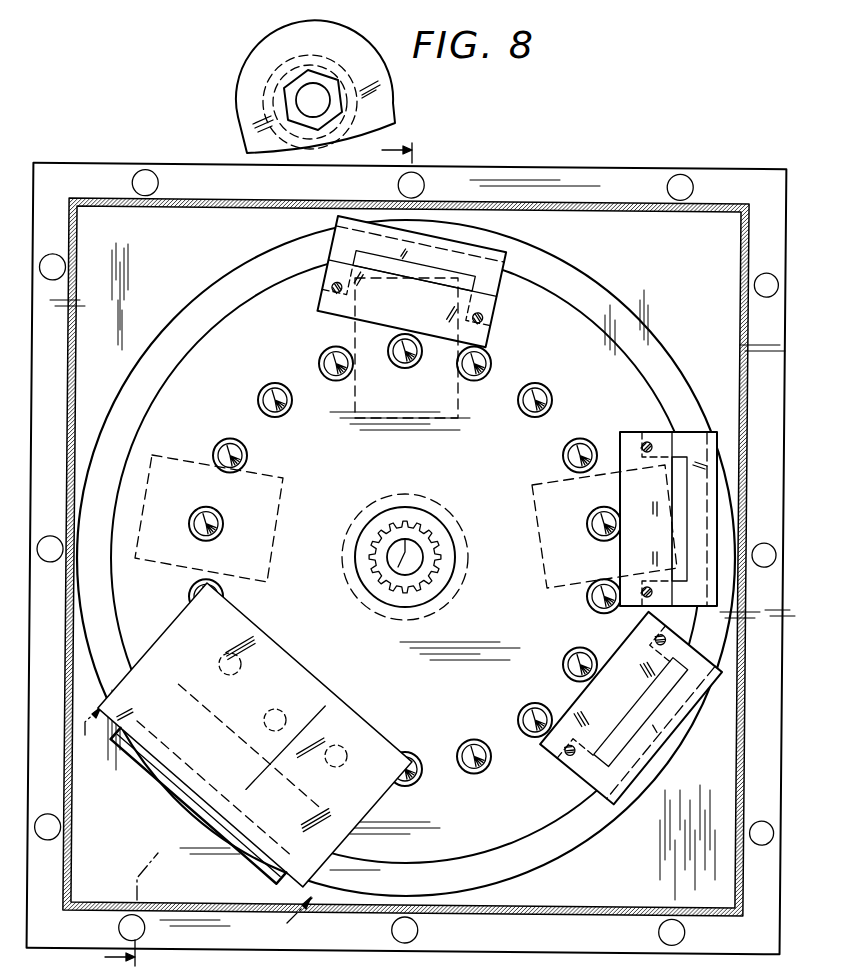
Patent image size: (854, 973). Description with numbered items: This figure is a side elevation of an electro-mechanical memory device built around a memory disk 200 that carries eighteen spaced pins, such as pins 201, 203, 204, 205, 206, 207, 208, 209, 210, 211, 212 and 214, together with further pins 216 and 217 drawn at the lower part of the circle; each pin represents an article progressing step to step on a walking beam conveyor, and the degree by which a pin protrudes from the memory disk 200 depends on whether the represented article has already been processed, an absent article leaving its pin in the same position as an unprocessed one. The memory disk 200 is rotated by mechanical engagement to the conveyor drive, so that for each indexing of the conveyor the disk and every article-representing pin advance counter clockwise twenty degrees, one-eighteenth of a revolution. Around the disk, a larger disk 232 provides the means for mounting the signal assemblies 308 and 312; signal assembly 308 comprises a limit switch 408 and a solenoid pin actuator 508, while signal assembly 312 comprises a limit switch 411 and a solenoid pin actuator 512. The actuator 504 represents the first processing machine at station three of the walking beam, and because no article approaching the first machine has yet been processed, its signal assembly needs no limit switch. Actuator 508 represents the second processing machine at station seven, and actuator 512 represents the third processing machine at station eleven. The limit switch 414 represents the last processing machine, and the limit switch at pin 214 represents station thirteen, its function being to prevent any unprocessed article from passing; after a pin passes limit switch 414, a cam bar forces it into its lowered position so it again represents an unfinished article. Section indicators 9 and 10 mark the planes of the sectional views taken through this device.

The memory disk 200 is at (550, 812).
The disk 232 is at (535, 862).
The pin 201 is at (305, 702).
The pin 203 is at (194, 590).
The pin 204 is at (220, 514).
The pin 205 is at (245, 454).
The pin 206 is at (263, 394).
The pin 207 is at (322, 357).
The pin 208 is at (404, 360).
The pin 209 is at (490, 357).
The pin 210 is at (542, 393).
The pin 211 is at (571, 454).
The pin 212 is at (596, 528).
The pin 214 is at (583, 650).
The locating pin 216 is at (474, 742).
The locating pin 217 is at (407, 784).
The signal assembly 308 is at (451, 281).
The limit switch 408 is at (502, 292).
The signal assembly 312 is at (647, 483).
The limit switch 411 is at (620, 435).
The limit switch 414 is at (562, 760).
The solenoid pin actuator 504 is at (196, 446).
The solenoid pin actuator 508 is at (425, 422).
The solenoid pin actuator 512 is at (531, 526).
The section line 9- 9 is at (194, 825).
The section line 10- 10 is at (273, 556).